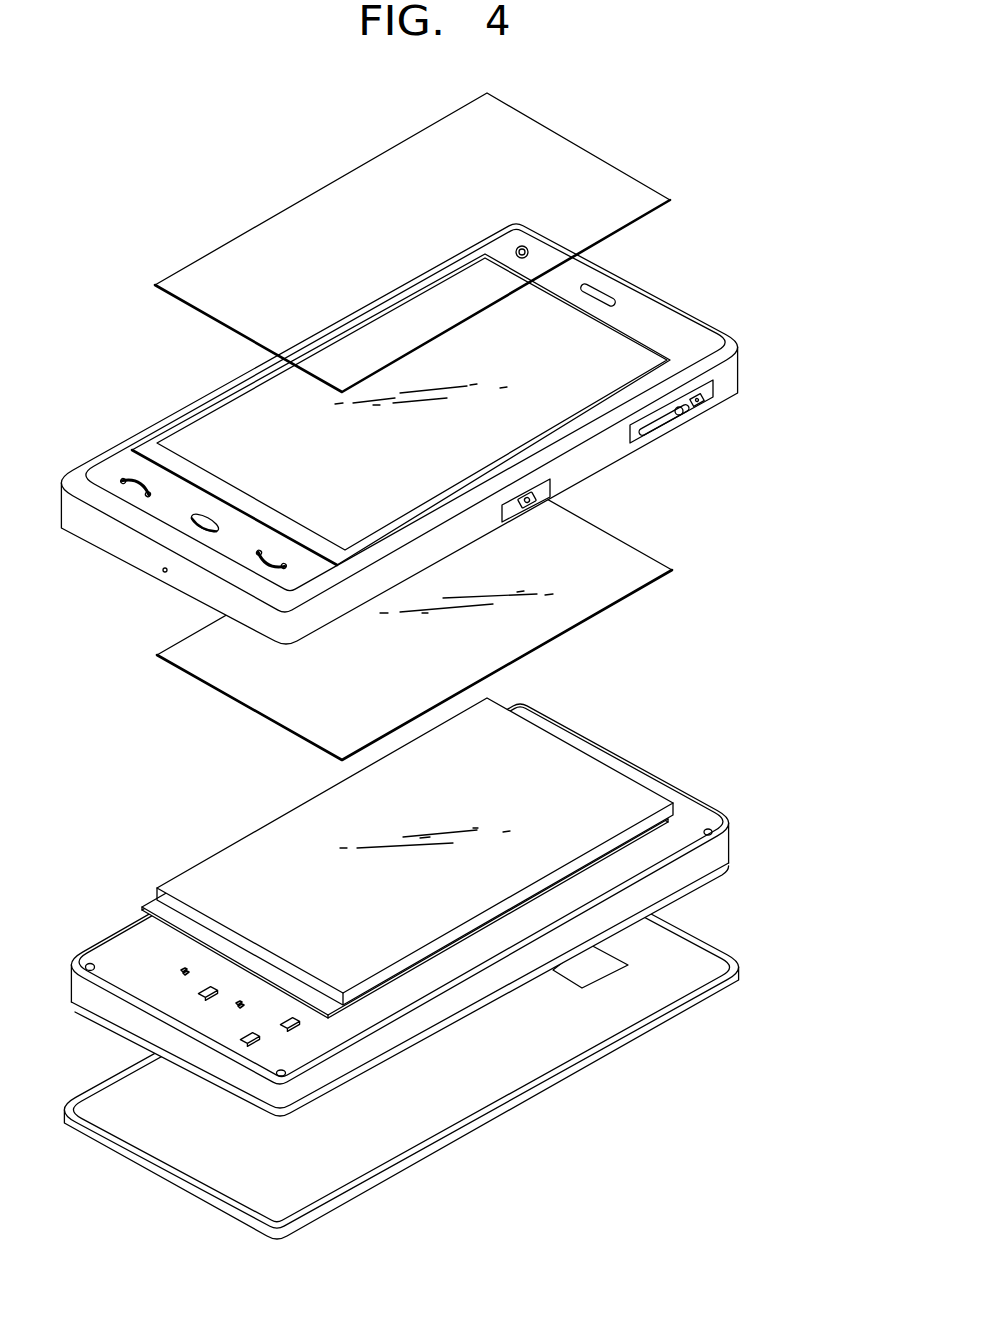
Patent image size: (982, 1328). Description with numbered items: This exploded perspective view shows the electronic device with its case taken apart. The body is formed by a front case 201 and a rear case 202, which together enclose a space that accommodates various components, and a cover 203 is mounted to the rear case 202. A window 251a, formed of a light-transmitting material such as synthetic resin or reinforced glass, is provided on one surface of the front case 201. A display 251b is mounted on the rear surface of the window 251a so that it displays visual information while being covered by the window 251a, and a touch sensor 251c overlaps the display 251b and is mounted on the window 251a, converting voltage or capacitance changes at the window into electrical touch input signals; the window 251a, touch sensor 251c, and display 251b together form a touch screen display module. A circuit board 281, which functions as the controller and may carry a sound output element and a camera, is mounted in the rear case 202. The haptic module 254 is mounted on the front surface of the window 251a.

The front case 201 is at (727, 347).
The rear case 202 is at (717, 851).
The cover 203 is at (687, 945).
The haptic module 254 is at (337, 203).
The window 251a is at (610, 343).
The display 251b is at (582, 780).
The touch sensor 251c is at (618, 560).
The circuit board 281 is at (680, 822).